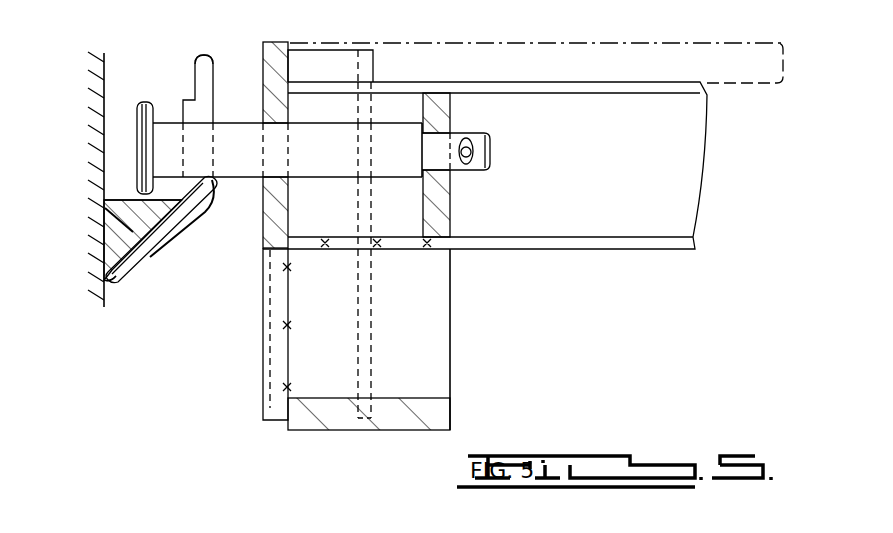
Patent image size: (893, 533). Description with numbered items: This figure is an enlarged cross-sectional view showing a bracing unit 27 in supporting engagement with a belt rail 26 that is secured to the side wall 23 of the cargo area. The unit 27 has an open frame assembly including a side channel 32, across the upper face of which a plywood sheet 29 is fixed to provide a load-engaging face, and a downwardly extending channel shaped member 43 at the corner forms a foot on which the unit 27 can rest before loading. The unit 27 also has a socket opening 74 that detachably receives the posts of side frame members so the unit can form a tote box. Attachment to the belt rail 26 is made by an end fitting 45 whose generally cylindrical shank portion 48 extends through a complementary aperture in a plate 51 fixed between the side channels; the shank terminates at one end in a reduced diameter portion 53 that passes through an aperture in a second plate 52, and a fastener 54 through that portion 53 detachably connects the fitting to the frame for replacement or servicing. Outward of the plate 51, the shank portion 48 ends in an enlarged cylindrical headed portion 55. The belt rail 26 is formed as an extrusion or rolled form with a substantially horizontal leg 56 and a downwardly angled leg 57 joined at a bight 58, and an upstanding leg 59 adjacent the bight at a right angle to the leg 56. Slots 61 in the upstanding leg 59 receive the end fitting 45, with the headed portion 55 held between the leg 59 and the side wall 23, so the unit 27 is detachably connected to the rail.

The side wall 23 is at (104, 82).
The belt rail 26 is at (148, 253).
The bracing unit 27 is at (551, 248).
The plywood sheet 29 is at (488, 43).
The channel 32 is at (627, 83).
The channel shaped member 43 is at (443, 412).
The end fitting 45 is at (231, 123).
The shank portion 48 is at (243, 168).
The plate 51 is at (285, 205).
The plate 52 is at (443, 205).
The reduced diameter portion 53 is at (491, 148).
The fastener 54 is at (473, 153).
The enlarged headed portion 55 is at (138, 112).
The leg 56 is at (104, 233).
The leg 57 is at (121, 278).
The bight 58 is at (143, 232).
The upstanding leg 59 is at (213, 63).
The slot 61 is at (183, 100).
The socket opening 74 is at (373, 62).